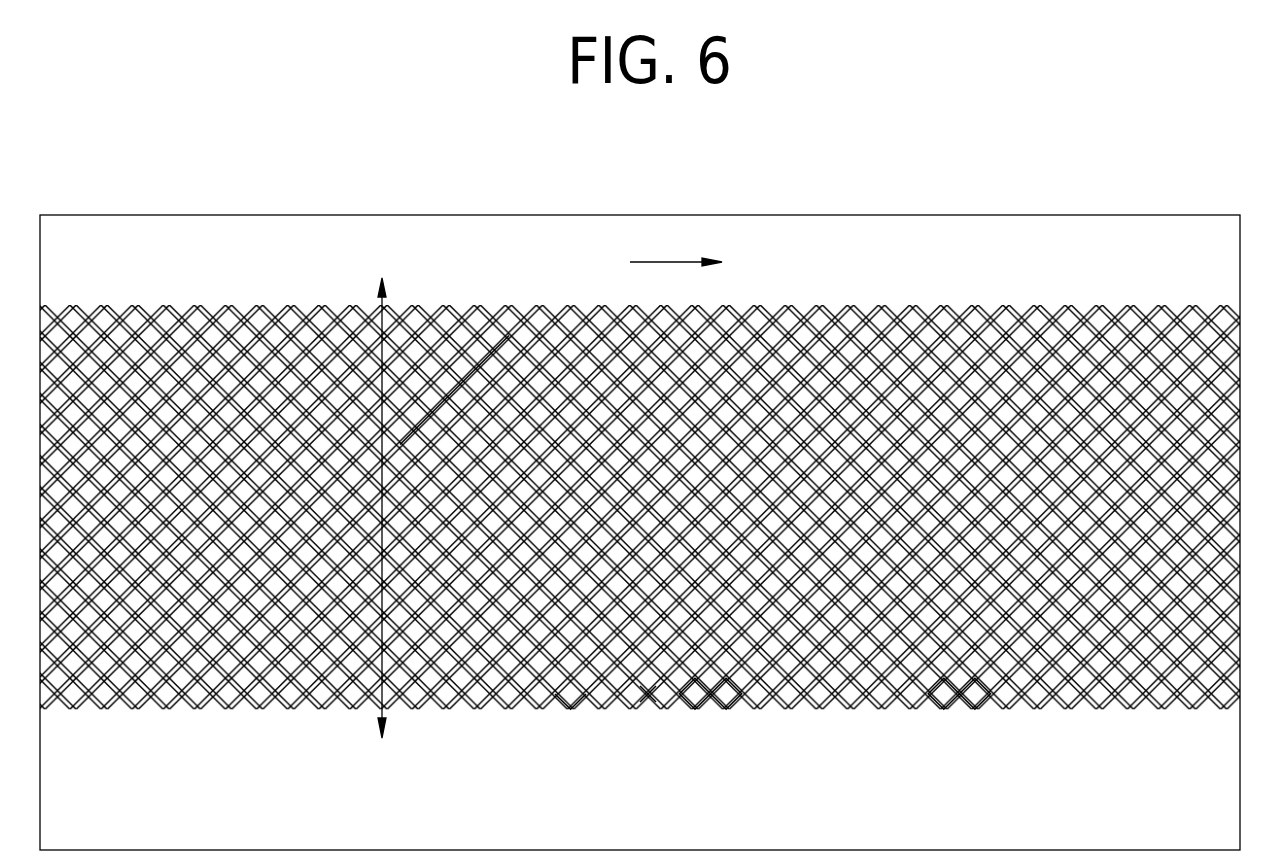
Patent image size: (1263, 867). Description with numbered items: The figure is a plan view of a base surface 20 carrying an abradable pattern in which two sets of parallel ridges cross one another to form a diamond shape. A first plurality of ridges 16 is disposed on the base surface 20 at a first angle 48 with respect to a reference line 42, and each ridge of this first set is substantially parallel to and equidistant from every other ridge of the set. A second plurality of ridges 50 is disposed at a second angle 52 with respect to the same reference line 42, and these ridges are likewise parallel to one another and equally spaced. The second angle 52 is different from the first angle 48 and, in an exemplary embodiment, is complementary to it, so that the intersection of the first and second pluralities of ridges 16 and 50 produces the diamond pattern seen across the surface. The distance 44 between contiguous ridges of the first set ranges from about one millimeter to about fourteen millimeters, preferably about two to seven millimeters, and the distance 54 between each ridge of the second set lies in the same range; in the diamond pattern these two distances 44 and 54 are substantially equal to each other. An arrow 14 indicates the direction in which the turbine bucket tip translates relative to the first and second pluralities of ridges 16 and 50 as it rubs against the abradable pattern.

The arrow 14 is at (670, 262).
The first plurality of ridges 16 is at (985, 705).
The base surface 20 is at (262, 803).
The reference line 42 is at (370, 353).
The distance between contiguous ridges 44 is at (654, 697).
The first angle 48 is at (420, 540).
The second plurality of ridges 50 is at (750, 700).
The second angle 52 is at (507, 337).
The distance between each ridge 54 is at (571, 700).